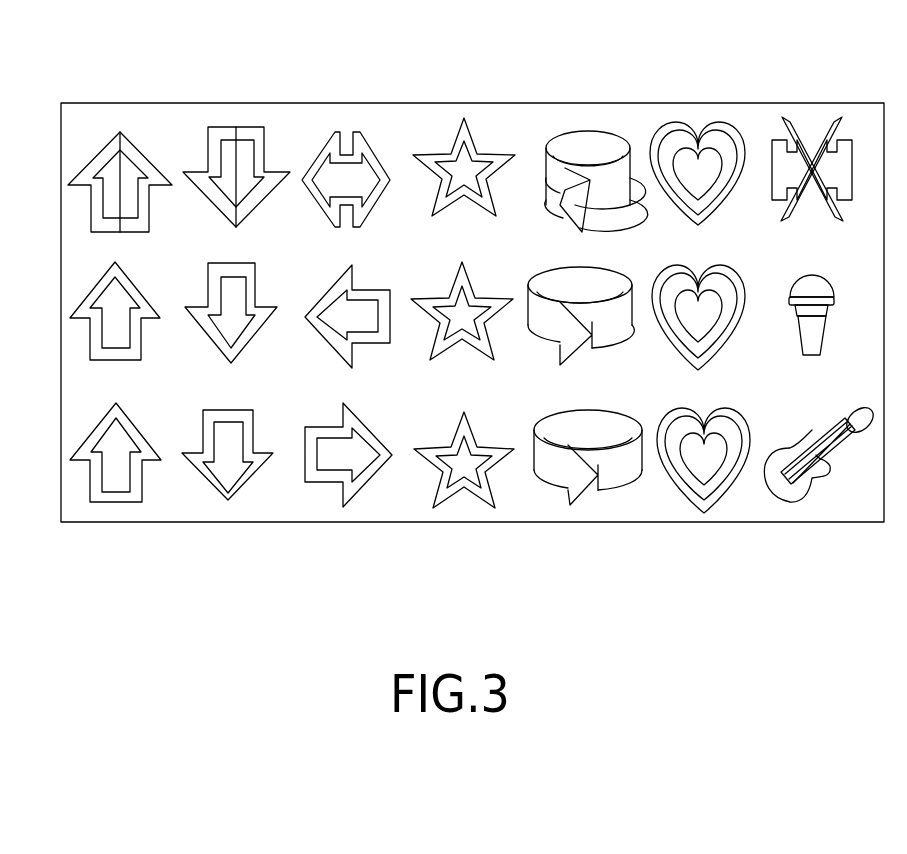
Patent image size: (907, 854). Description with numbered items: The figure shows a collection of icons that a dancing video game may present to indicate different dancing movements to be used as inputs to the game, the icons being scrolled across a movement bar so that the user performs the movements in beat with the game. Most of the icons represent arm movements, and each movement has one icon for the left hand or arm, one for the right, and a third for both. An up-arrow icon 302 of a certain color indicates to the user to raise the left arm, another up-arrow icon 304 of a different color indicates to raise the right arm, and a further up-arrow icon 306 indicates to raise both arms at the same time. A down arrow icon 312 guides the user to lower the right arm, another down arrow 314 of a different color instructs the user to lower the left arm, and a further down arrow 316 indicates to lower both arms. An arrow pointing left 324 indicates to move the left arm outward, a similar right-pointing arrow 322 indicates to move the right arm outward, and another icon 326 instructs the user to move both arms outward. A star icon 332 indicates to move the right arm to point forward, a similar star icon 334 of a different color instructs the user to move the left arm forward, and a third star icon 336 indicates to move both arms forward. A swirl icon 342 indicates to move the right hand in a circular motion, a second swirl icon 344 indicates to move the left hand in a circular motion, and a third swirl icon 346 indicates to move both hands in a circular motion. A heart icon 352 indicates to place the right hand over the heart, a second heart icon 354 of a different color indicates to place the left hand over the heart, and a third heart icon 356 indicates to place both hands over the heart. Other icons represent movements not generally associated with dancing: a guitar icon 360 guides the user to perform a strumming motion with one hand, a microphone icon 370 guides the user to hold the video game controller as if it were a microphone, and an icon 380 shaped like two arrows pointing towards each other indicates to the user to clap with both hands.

The up-arrow icon 302 is at (102, 500).
The up-arrow icon 304 is at (141, 288).
The up-arrow icon 306 is at (128, 134).
The down arrow icon 312 is at (230, 496).
The down arrow 314 is at (256, 290).
The down arrow 316 is at (256, 127).
The right-pointing arrow 322 is at (345, 500).
The arrow pointing left 324 is at (366, 285).
The icon 326 is at (358, 132).
The star icon 332 is at (445, 500).
The star icon 334 is at (478, 288).
The star icon 336 is at (463, 120).
The swirl icon 342 is at (570, 505).
The swirl icon 344 is at (585, 290).
The swirl icon 346 is at (588, 131).
The heart icon 352 is at (695, 510).
The heart icon 354 is at (708, 290).
The heart icon 356 is at (698, 126).
The guitar icon 360 is at (795, 500).
The microphone icon 370 is at (815, 290).
The clap icon 380 is at (800, 130).